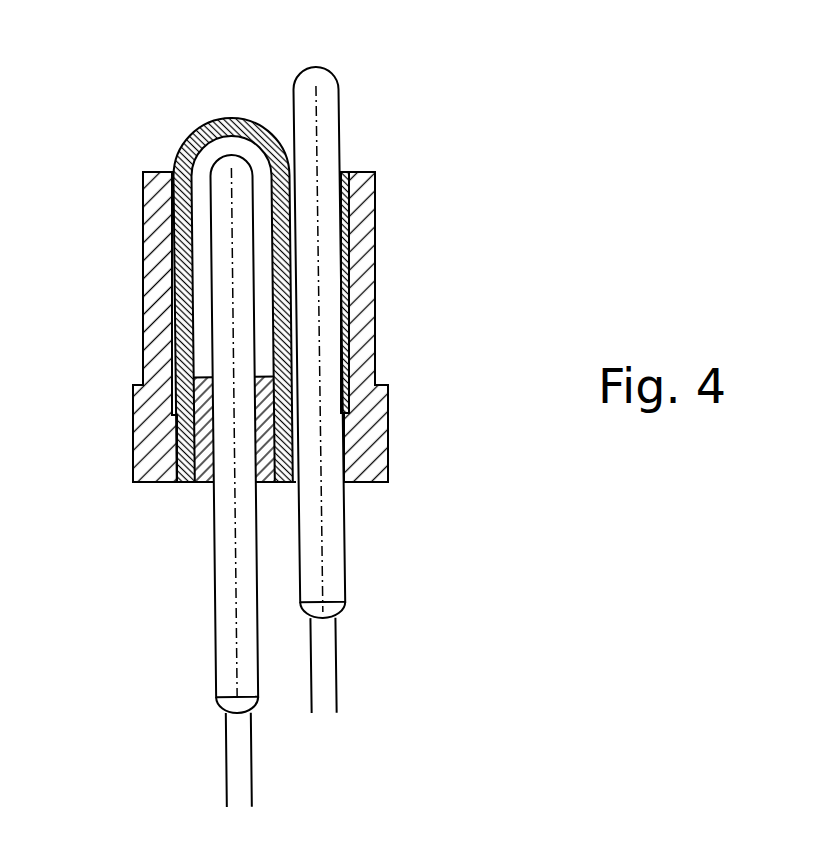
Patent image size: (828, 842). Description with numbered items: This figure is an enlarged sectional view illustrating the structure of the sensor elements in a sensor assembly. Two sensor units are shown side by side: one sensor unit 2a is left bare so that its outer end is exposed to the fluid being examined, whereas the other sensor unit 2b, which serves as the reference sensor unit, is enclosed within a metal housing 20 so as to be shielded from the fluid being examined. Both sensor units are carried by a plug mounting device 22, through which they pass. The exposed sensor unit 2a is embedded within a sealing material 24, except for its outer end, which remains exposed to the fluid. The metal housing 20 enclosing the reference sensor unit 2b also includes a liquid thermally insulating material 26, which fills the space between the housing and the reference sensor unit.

The sensor unit 2a is at (323, 76).
The sensor unit 2b is at (233, 168).
The metal housing 20 is at (175, 157).
The plug mounting device 22 is at (378, 428).
The sealing material 24 is at (341, 202).
The liquid thermally insulating material 26 is at (202, 325).